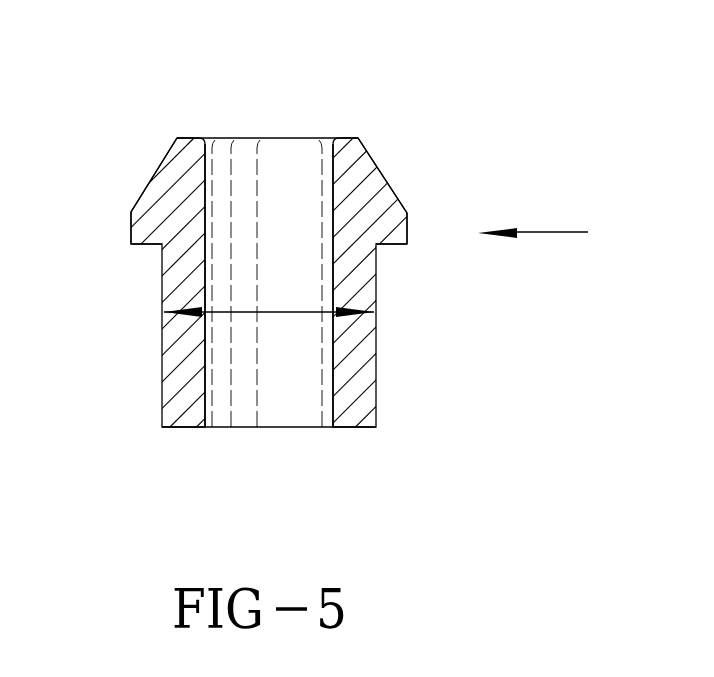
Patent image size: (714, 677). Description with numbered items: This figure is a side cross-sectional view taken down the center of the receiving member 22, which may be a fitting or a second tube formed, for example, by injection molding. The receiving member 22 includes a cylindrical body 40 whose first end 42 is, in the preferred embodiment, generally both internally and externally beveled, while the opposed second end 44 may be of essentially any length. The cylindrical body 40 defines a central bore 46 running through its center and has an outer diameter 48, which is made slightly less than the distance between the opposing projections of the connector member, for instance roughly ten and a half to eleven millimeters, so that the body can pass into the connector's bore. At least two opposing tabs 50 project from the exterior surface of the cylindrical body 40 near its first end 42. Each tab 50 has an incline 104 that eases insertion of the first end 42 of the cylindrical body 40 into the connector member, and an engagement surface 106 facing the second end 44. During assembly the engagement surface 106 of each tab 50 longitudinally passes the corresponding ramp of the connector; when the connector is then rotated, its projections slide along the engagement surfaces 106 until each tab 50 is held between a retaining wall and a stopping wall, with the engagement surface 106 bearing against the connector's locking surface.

The receiving member 22 is at (552, 231).
The cylindrical body 40 is at (377, 302).
The first end 42 is at (343, 138).
The second end 44 is at (338, 428).
The central bore 46 is at (206, 113).
The outer diameter 48 is at (270, 313).
The tabs 50 is at (130, 217).
The incline 104 is at (153, 177).
The engagement surface 106 is at (152, 246).